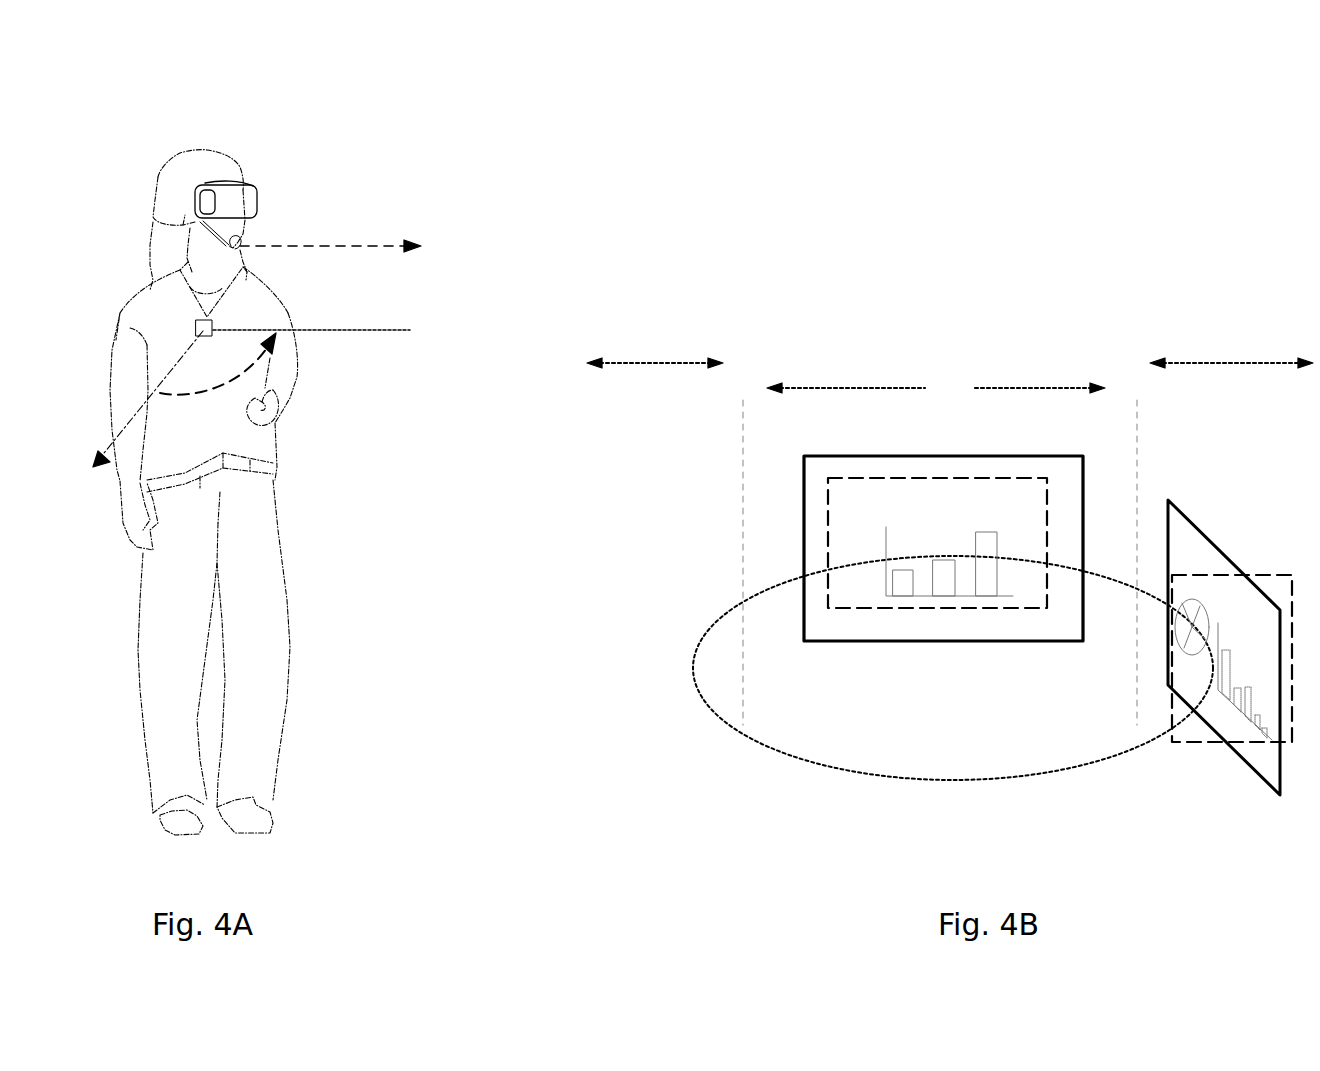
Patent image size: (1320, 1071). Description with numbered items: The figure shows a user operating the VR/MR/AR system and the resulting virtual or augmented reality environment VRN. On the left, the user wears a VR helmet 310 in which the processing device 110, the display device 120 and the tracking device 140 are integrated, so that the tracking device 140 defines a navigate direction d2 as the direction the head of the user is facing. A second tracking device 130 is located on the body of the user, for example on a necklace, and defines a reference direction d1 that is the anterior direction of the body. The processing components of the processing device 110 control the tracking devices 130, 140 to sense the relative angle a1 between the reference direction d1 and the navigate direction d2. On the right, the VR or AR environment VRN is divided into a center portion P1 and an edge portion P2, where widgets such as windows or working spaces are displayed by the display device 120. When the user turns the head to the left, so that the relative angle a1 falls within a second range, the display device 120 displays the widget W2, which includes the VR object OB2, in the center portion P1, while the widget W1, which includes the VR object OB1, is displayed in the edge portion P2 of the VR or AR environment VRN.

In FIG. 4A, the VR helmet 310 is at (222, 158).
In FIG. 4A, the processing device 110 is at (172, 177).
In FIG. 4A, the display device 120 is at (257, 212).
In FIG. 4A, the tracking device 140 is at (228, 244).
In FIG. 4A, the tracking device 130 is at (197, 323).
In FIG. 4A, the relative angle a1 is at (218, 364).
In FIG. 4A, the reference direction d1 is at (138, 416).
In FIG. 4A, the navigate direction d2 is at (350, 246).
In FIG. 4B, the VR or AR environment VRN is at (1290, 329).
In FIG. 4B, the edge portion P2 is at (1238, 363).
In FIG. 4B, the center portion P1 is at (936, 388).
In FIG. 4B, the widget W2 is at (977, 456).
In FIG. 4B, the VR object OB2 is at (905, 610).
In FIG. 4B, the widget W1 is at (1230, 556).
In FIG. 4B, the VR object OB1 is at (1207, 744).